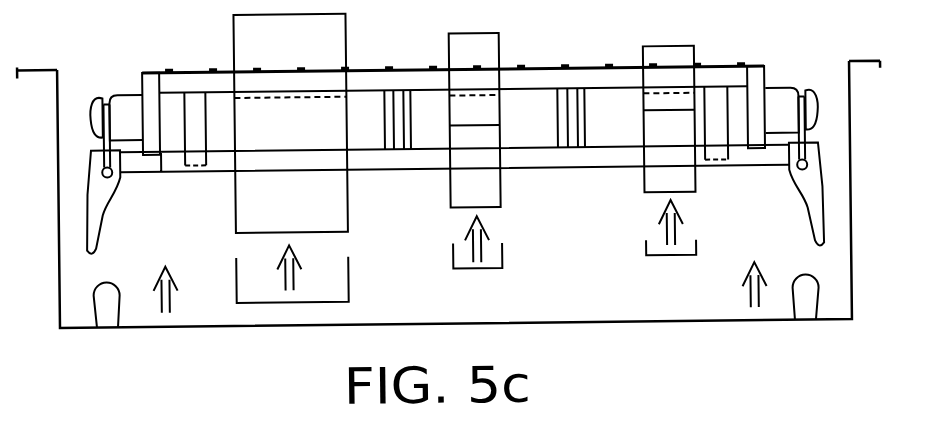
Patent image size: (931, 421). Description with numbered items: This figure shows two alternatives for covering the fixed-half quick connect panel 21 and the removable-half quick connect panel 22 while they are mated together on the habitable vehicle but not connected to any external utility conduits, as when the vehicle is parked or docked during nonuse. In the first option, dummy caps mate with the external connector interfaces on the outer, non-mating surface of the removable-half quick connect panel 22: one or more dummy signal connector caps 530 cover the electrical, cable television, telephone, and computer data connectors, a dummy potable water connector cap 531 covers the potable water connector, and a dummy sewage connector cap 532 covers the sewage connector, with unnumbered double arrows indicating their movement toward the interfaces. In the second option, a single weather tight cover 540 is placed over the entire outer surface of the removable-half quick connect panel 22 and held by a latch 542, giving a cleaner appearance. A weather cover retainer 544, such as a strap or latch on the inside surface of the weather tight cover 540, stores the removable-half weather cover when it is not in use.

The fixed-half quick connect panel 21 is at (208, 67).
The removable-half quick connect panel 22 is at (221, 202).
The dummy signal connector cap 530 is at (680, 265).
The dummy potable water connector cap 531 is at (490, 273).
The dummy sewage connector cap 532 is at (400, 266).
The weather tight cover 540 is at (287, 330).
The latch 542 is at (22, 68).
The weather cover retainer 544 is at (102, 297).